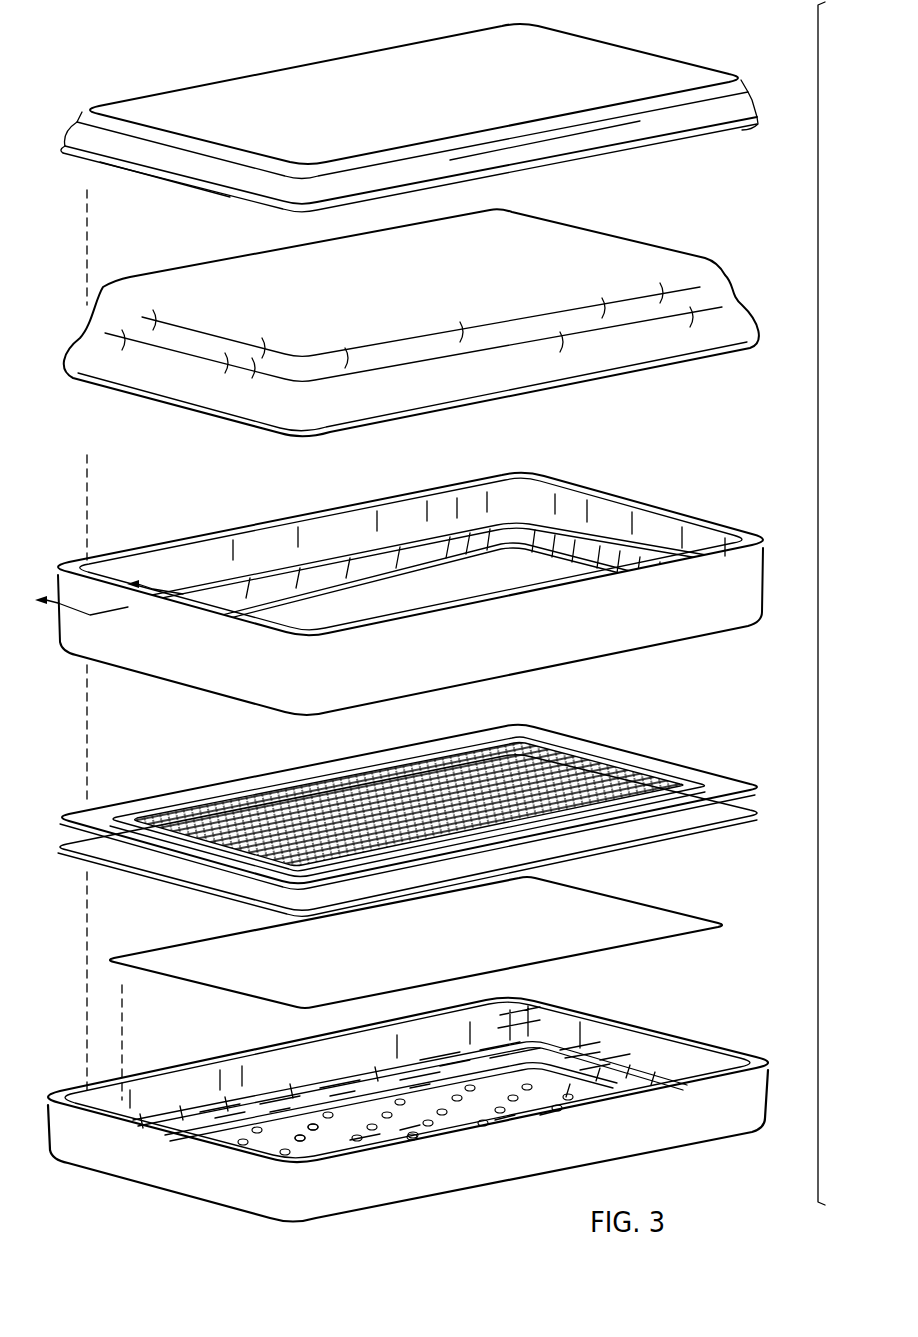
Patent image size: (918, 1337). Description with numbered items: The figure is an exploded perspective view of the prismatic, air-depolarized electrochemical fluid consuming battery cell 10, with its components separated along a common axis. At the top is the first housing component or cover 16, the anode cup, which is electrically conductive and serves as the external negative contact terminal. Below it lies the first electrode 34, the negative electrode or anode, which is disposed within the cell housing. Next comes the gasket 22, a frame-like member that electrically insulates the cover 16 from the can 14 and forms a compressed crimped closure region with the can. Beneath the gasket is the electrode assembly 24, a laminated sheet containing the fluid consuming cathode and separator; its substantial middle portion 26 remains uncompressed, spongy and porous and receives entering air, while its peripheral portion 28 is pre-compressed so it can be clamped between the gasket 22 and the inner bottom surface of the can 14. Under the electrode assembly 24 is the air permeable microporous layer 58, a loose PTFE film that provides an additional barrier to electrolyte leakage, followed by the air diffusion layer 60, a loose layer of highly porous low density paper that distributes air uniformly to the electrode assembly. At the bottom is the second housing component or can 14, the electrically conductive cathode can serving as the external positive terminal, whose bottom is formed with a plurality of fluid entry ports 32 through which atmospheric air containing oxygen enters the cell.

The electrochemical fluid consuming battery cell 10 is at (820, 586).
The second housing component (can) 14 is at (680, 1142).
The first housing component (cover) 16 is at (640, 60).
The gasket 22 is at (662, 498).
The electrode assembly 24 is at (434, 790).
The middle portion 26 is at (553, 770).
The peripheral portion 28 is at (750, 777).
The fluid entry ports 32 is at (313, 1125).
The first electrode 34 is at (596, 246).
The microporous layer 58 is at (718, 836).
The air diffusion layer 60 is at (630, 913).